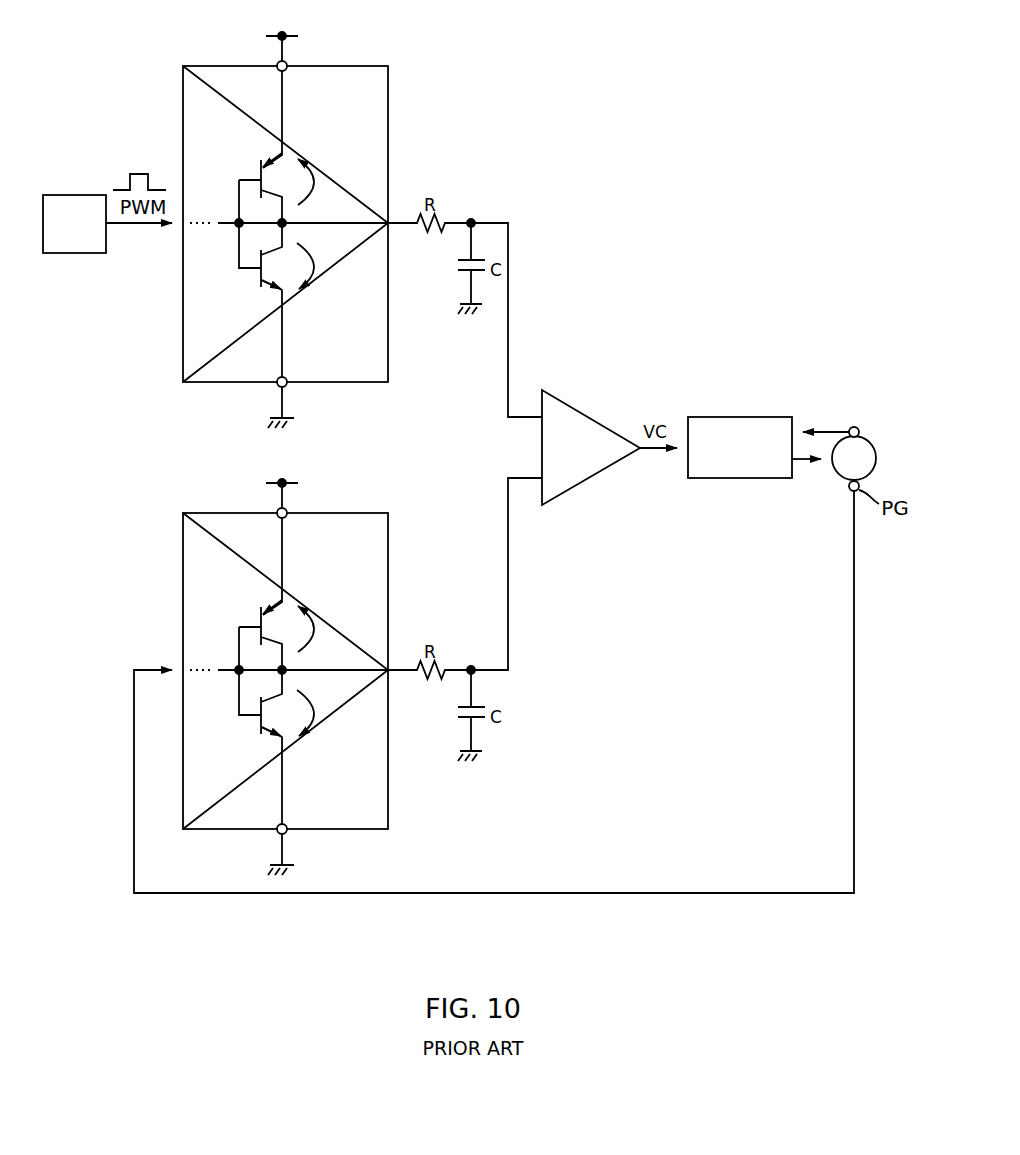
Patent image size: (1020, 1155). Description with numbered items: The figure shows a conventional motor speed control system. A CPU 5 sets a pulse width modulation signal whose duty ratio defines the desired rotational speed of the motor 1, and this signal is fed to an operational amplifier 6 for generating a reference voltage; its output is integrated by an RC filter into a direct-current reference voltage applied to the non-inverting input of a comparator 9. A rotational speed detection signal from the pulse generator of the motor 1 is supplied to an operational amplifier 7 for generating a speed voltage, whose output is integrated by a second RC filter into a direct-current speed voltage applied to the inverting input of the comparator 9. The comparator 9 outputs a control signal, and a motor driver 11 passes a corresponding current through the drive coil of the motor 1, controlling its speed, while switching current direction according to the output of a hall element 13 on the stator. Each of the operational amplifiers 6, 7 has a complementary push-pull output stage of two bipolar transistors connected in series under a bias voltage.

The CPU 5 is at (66, 195).
The operational amplifier 6 is at (360, 66).
The operational amplifier 7 is at (345, 513).
The comparator 9 is at (575, 408).
The motor driver 11 is at (750, 417).
The hall element 13 is at (858, 427).
The motor 1 is at (877, 449).